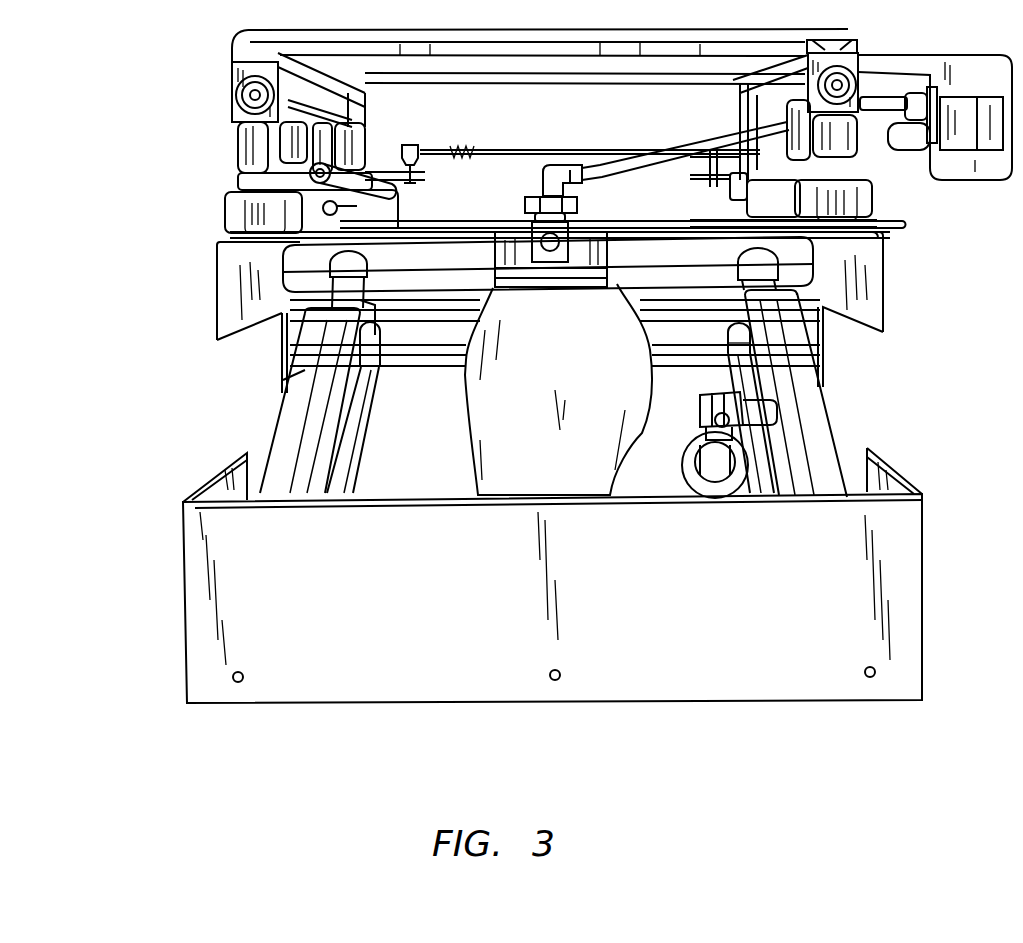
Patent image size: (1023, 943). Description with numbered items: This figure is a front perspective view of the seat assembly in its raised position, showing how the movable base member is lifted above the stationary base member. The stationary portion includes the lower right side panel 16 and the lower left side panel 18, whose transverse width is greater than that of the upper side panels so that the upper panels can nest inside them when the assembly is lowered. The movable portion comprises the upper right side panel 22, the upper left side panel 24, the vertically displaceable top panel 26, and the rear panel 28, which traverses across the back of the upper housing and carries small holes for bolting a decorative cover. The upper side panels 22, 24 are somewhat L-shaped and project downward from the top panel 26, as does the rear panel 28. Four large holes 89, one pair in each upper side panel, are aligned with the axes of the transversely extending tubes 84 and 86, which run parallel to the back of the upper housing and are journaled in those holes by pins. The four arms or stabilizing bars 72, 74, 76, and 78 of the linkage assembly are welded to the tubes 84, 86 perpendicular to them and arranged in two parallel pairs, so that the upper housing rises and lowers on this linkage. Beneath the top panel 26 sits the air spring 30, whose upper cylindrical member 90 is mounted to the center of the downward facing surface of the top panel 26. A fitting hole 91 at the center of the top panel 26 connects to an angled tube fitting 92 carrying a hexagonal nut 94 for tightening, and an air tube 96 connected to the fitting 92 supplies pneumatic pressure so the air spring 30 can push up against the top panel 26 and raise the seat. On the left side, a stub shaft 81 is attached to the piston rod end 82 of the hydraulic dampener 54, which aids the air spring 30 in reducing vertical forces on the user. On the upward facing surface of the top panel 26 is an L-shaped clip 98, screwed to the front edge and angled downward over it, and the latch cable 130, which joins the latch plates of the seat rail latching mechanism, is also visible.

The lower right side panel 16 is at (228, 475).
The lower left side panel 18 is at (883, 472).
The upper right side panel 22 is at (227, 287).
The upper left side panel 24 is at (868, 317).
The vertically displaceable top panel 26 is at (435, 220).
The rear panel 28 is at (370, 302).
The air spring 30 is at (582, 473).
The hydraulic dampener 54 is at (692, 467).
The stabilizing bar 72 is at (315, 370).
The stabilizing bar 74 is at (352, 442).
The stabilizing bar 76 is at (812, 403).
The stabilizing bar 78 is at (770, 447).
The stub shaft 81 is at (753, 410).
The piston rod end 82 is at (722, 420).
The transversely extending tube 84 is at (790, 257).
The transversely extending tube 86 is at (707, 333).
The large holes 89 is at (297, 265).
The upper cylindrical member 90 is at (582, 253).
The fitting hole 91 is at (533, 218).
The angled tube fitting 92 is at (550, 165).
The hexagonal nut 94 is at (533, 200).
The air tube 96 is at (690, 142).
The L-shaped clip 98 is at (548, 253).
The latch cable 130 is at (593, 148).